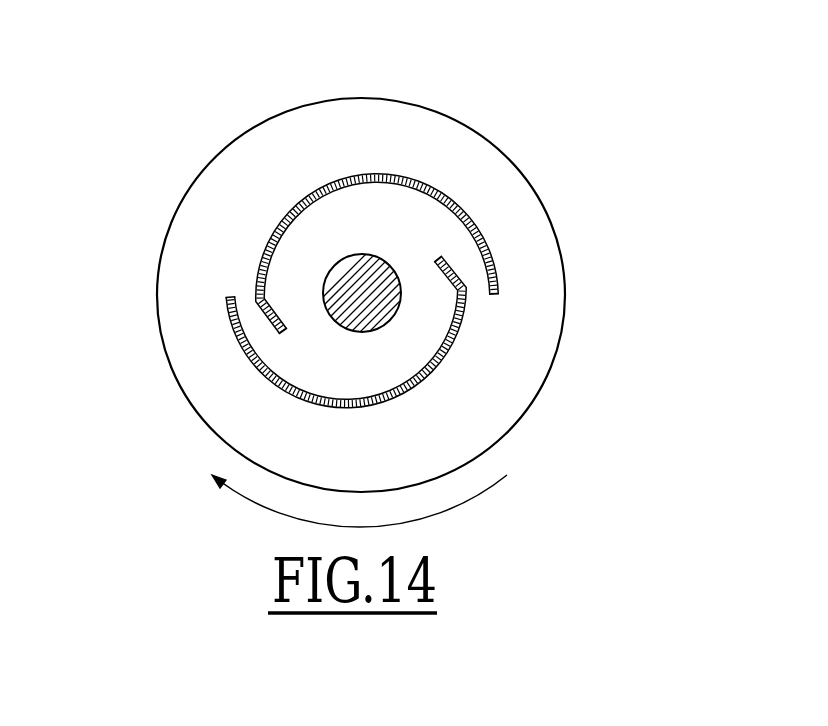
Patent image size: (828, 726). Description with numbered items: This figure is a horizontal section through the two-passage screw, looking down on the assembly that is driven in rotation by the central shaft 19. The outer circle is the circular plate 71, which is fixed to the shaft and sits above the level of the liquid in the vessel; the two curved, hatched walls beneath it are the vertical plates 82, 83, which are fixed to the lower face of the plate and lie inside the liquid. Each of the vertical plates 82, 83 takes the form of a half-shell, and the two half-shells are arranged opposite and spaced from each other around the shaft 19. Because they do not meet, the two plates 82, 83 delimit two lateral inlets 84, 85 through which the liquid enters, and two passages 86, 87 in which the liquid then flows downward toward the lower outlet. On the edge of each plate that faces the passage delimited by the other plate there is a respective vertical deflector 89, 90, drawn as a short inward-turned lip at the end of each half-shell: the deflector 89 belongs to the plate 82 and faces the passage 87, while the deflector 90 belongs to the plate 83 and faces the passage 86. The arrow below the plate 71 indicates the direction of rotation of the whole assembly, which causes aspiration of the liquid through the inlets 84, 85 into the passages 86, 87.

The circular plate 71 is at (267, 141).
The shaft 19 is at (382, 312).
The vertical plate 83 is at (442, 195).
The vertical plate 82 is at (268, 382).
The vertical deflector 90 is at (270, 312).
The vertical deflector 89 is at (447, 272).
The lateral inlet 85 is at (477, 292).
The lateral inlet 84 is at (247, 300).
The passage 87 is at (355, 200).
The passage 86 is at (378, 377).